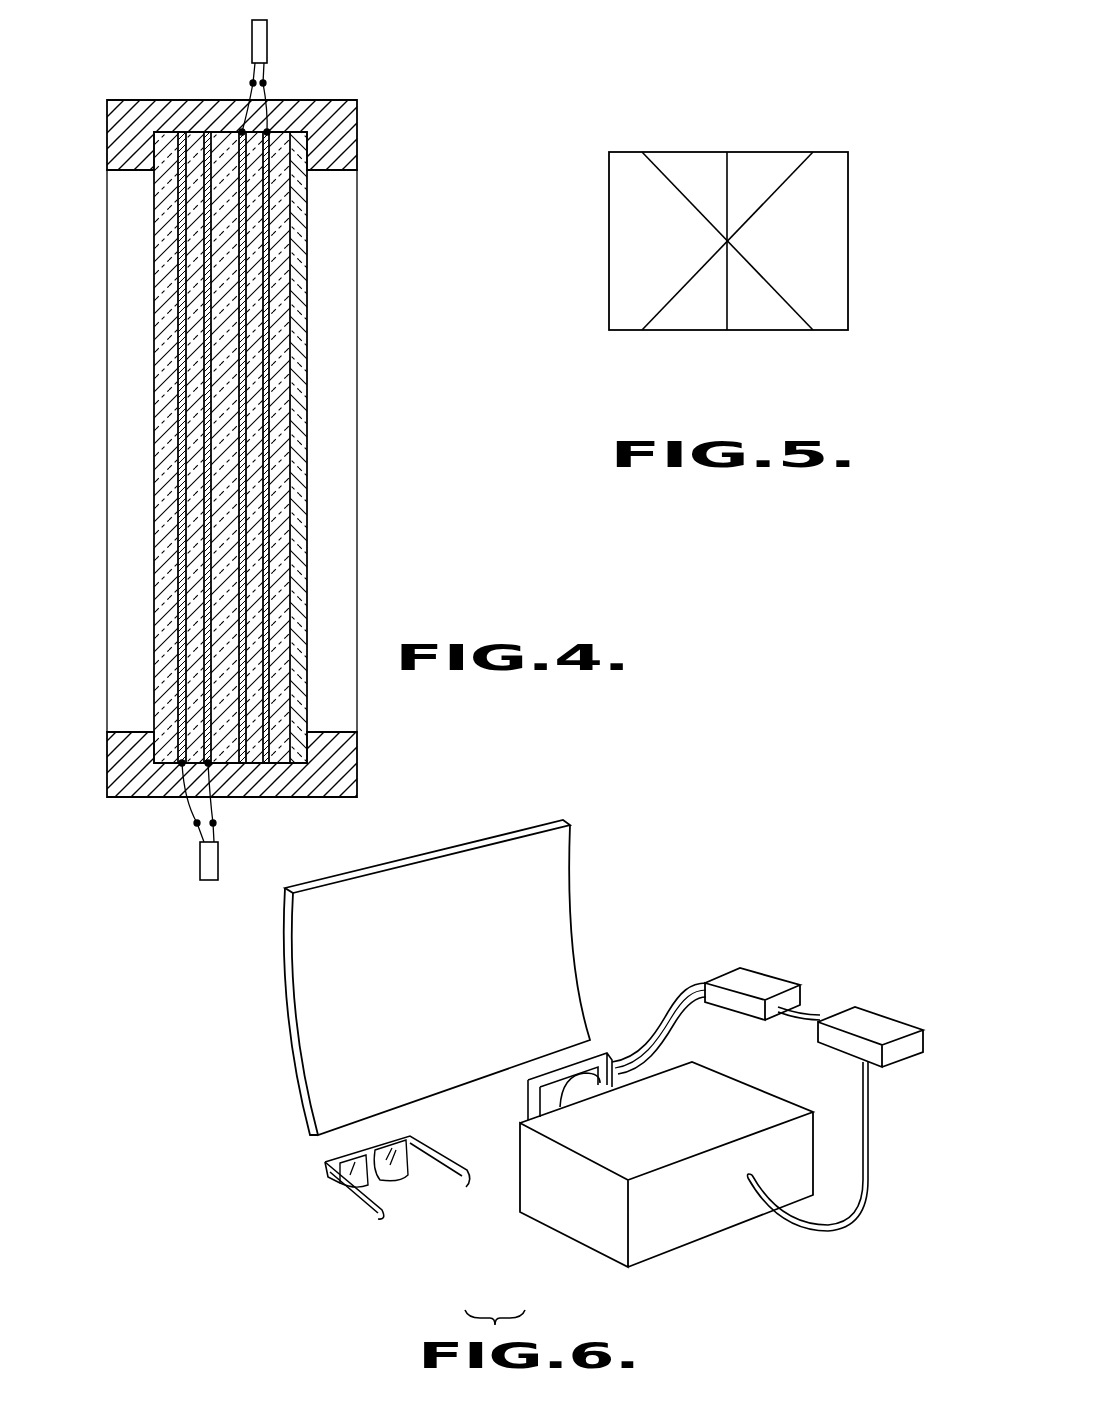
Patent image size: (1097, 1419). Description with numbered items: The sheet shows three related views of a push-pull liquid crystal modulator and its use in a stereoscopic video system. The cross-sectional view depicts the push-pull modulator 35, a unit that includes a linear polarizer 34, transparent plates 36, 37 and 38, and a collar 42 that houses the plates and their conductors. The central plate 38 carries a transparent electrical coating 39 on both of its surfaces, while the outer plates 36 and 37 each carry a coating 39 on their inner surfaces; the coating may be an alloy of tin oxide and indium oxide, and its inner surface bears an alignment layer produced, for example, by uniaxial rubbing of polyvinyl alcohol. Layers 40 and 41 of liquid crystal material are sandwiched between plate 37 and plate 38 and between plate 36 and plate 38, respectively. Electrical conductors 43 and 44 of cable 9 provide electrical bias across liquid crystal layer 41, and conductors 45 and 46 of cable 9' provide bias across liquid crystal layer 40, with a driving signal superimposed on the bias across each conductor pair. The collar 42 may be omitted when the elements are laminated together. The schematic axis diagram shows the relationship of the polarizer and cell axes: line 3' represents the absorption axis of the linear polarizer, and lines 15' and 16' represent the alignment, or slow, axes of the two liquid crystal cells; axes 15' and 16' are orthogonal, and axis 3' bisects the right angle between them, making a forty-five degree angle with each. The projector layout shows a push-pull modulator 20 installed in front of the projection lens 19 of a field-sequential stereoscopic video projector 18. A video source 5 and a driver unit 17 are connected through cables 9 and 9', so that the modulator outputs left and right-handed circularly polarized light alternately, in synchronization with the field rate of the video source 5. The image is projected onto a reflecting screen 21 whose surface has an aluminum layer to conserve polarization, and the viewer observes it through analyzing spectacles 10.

In FIG. 5, the absorption axis of linear polarizer 3' is at (736, 272).
In FIG. 6, the video source 5 is at (876, 1020).
In FIG. 4, the cable 9 is at (274, 41).
In FIG. 6, the cable 9 is at (746, 1029).
In FIG. 4, the cable 9' is at (186, 866).
In FIG. 6, the cable 9' is at (659, 1006).
In FIG. 6, the analyzing spectacles 10 is at (325, 1168).
In FIG. 5, the alignment axis of liquid crystal cell 15' is at (727, 272).
In FIG. 5, the alignment axis of liquid crystal cell 16' is at (734, 272).
In FIG. 6, the driver unit 17 is at (763, 985).
In FIG. 6, the projector 18 is at (692, 1233).
In FIG. 6, the projection lens 19 is at (600, 1067).
In FIG. 6, the push-pull modulator 20 is at (533, 1092).
In FIG. 6, the reflecting screen 21 is at (563, 858).
In FIG. 4, the linear polarizer 34 is at (302, 218).
In FIG. 4, the push-pull modulator 35 is at (88, 195).
In FIG. 4, the transparent plate 36 is at (282, 265).
In FIG. 4, the transparent plate 37 is at (155, 296).
In FIG. 4, the central plate 38 is at (233, 332).
In FIG. 4, the transparent electrical coating 39 is at (181, 350).
In FIG. 4, the liquid crystal layer 40 is at (188, 412).
In FIG. 4, the liquid crystal layer 41 is at (257, 427).
In FIG. 4, the collar 42 is at (163, 100).
In FIG. 4, the electrical conductor 43 is at (250, 82).
In FIG. 4, the electrical conductor 44 is at (265, 80).
In FIG. 4, the electrical conductor 45 is at (197, 830).
In FIG. 4, the electrical conductor 46 is at (216, 830).